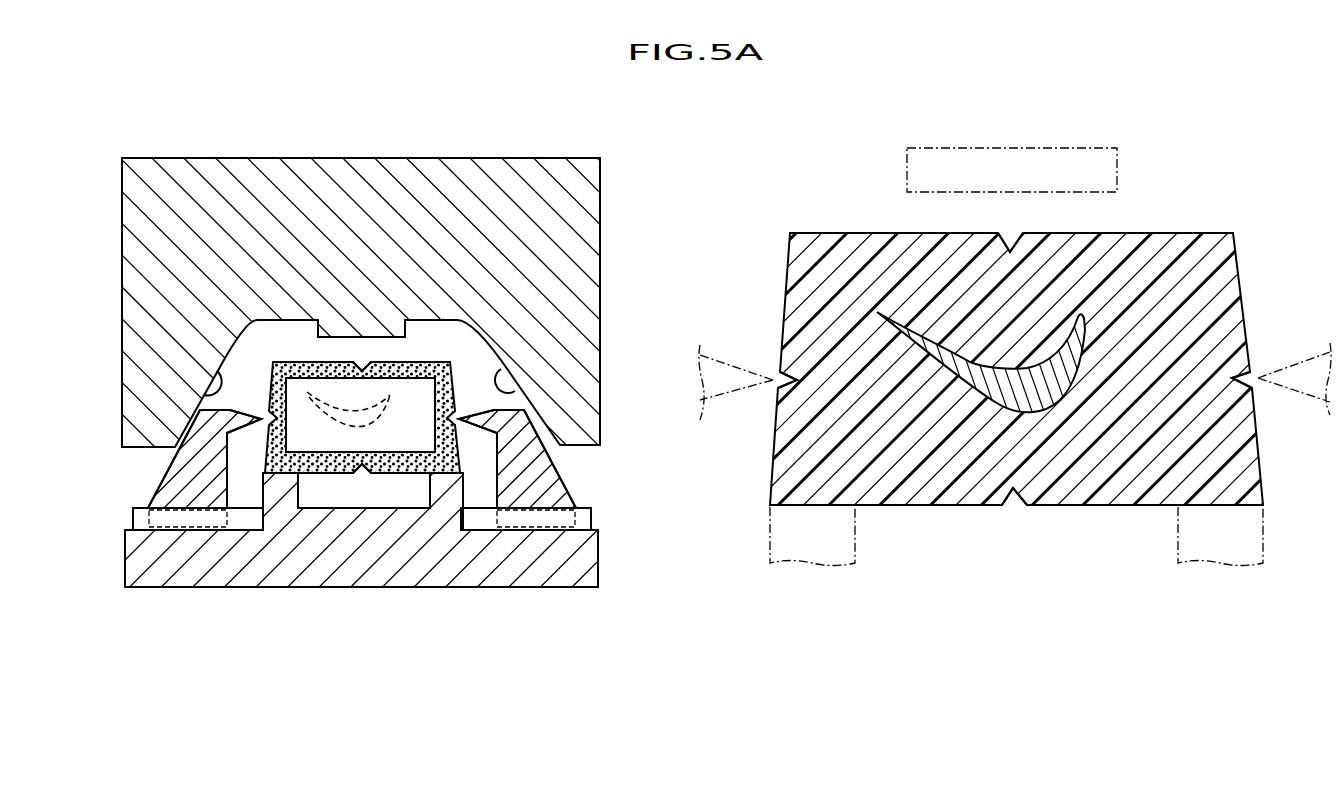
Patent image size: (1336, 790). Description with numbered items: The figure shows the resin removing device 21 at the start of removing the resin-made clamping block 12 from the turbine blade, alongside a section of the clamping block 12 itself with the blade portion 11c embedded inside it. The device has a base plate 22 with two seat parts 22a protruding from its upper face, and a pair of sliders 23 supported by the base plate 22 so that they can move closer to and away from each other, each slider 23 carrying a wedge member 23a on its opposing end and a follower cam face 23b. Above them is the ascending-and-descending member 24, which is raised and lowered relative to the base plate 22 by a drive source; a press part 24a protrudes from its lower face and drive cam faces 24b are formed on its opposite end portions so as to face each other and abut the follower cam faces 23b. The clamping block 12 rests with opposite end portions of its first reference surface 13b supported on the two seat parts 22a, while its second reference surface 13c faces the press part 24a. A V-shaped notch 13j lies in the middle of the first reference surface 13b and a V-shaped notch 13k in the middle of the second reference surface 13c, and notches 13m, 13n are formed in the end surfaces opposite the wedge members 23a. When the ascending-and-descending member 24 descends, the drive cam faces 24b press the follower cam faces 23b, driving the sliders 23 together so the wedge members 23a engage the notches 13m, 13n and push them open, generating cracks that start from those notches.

The resin removing device 21 is at (80, 200).
The ascending-and-descending member 24 is at (443, 285).
The press part 24a is at (360, 334).
The drive cam faces 24b is at (212, 372).
The resin-made clamping block 12 is at (800, 316).
The second reference surface 13c is at (415, 362).
The first reference surface 13b is at (322, 475).
The wedge members 23a is at (239, 417).
The follower cam faces 23b is at (164, 473).
The sliders 23 is at (364, 488).
The base plate 22 is at (360, 574).
The seat parts 22a is at (445, 487).
The V-shaped notch 13k is at (1010, 250).
The notch 13m is at (778, 375).
The notch 13n is at (1251, 372).
The V-shaped notch 13j is at (1011, 500).
The blade portion 11c is at (1053, 400).